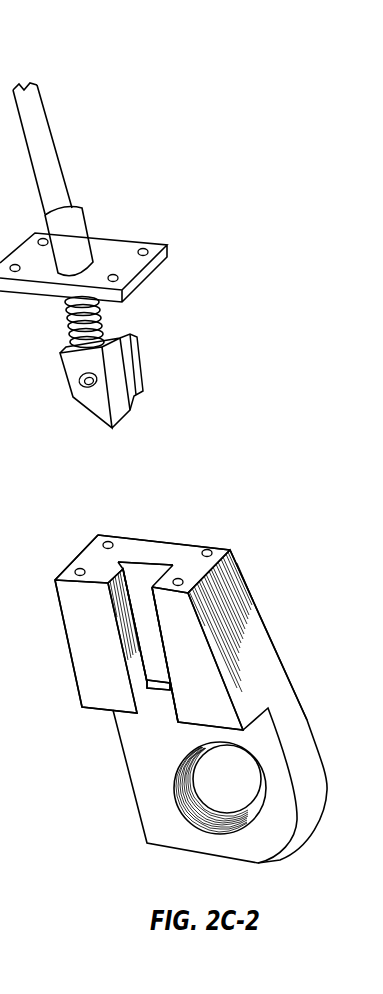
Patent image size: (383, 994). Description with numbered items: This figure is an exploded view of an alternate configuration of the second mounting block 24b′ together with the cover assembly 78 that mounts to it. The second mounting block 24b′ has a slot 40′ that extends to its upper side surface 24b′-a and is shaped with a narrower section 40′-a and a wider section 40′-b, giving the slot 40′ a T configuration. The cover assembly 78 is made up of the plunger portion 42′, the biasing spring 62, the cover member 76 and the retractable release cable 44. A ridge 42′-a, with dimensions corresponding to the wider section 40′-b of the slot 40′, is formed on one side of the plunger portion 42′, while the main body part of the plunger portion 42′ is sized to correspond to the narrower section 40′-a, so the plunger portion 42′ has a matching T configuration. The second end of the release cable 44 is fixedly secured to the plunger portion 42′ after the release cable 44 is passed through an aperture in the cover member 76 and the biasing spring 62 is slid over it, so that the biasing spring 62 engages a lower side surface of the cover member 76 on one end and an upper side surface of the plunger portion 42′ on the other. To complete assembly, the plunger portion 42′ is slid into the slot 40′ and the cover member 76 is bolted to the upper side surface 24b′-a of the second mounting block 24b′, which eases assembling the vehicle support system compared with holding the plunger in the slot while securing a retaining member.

The cover assembly 78 is at (164, 129).
The release cable 44 is at (57, 138).
The cover member 76 is at (100, 237).
The biasing spring 62 is at (103, 322).
The plunger portion 42′ is at (66, 382).
The ridge 42′-a is at (140, 373).
The second mounting block 24b′ is at (267, 627).
The upper side surface 24b′-a is at (155, 551).
The narrower section 40′-a is at (77, 626).
The wider section 40′-b is at (195, 573).
The slot 40′ is at (144, 721).